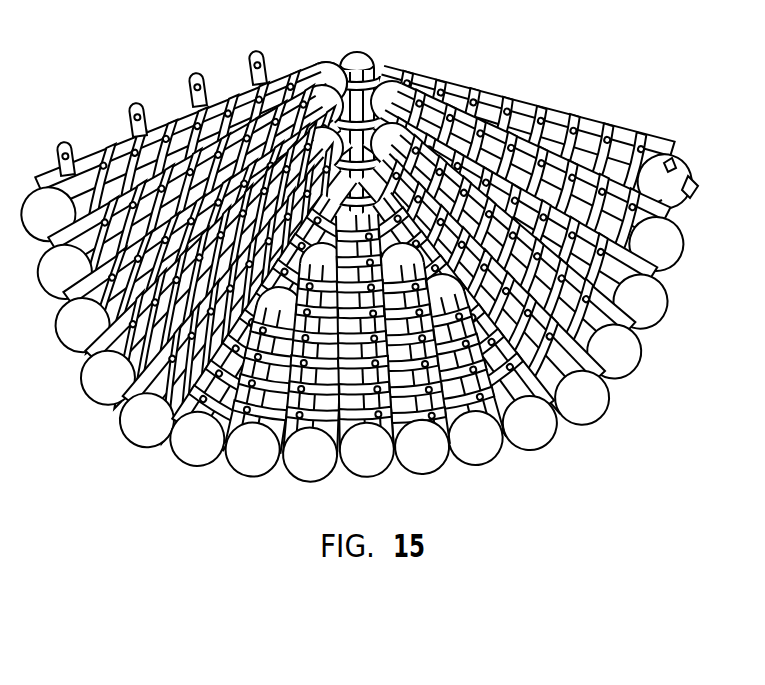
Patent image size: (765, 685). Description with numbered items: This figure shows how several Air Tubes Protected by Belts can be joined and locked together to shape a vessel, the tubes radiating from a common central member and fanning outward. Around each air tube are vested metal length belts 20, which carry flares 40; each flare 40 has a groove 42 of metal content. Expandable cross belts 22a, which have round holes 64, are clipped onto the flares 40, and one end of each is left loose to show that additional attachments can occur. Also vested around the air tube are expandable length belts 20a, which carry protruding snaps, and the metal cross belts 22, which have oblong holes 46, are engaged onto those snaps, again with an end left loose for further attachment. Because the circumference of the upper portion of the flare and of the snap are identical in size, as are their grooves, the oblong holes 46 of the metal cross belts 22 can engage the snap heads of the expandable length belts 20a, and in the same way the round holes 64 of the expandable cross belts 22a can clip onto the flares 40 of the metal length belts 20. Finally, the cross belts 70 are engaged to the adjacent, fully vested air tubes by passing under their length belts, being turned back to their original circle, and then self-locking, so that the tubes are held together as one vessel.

The metal length belt 20 is at (370, 130).
The expandable length belt 20a is at (667, 159).
The metal cross belt 22 is at (179, 125).
The expandable cross belt 22a is at (272, 72).
The flare 40 is at (247, 97).
The groove 42 is at (165, 128).
The oblong hole 46 is at (136, 113).
The round hole 64 is at (268, 44).
The cross belt 70 is at (377, 65).